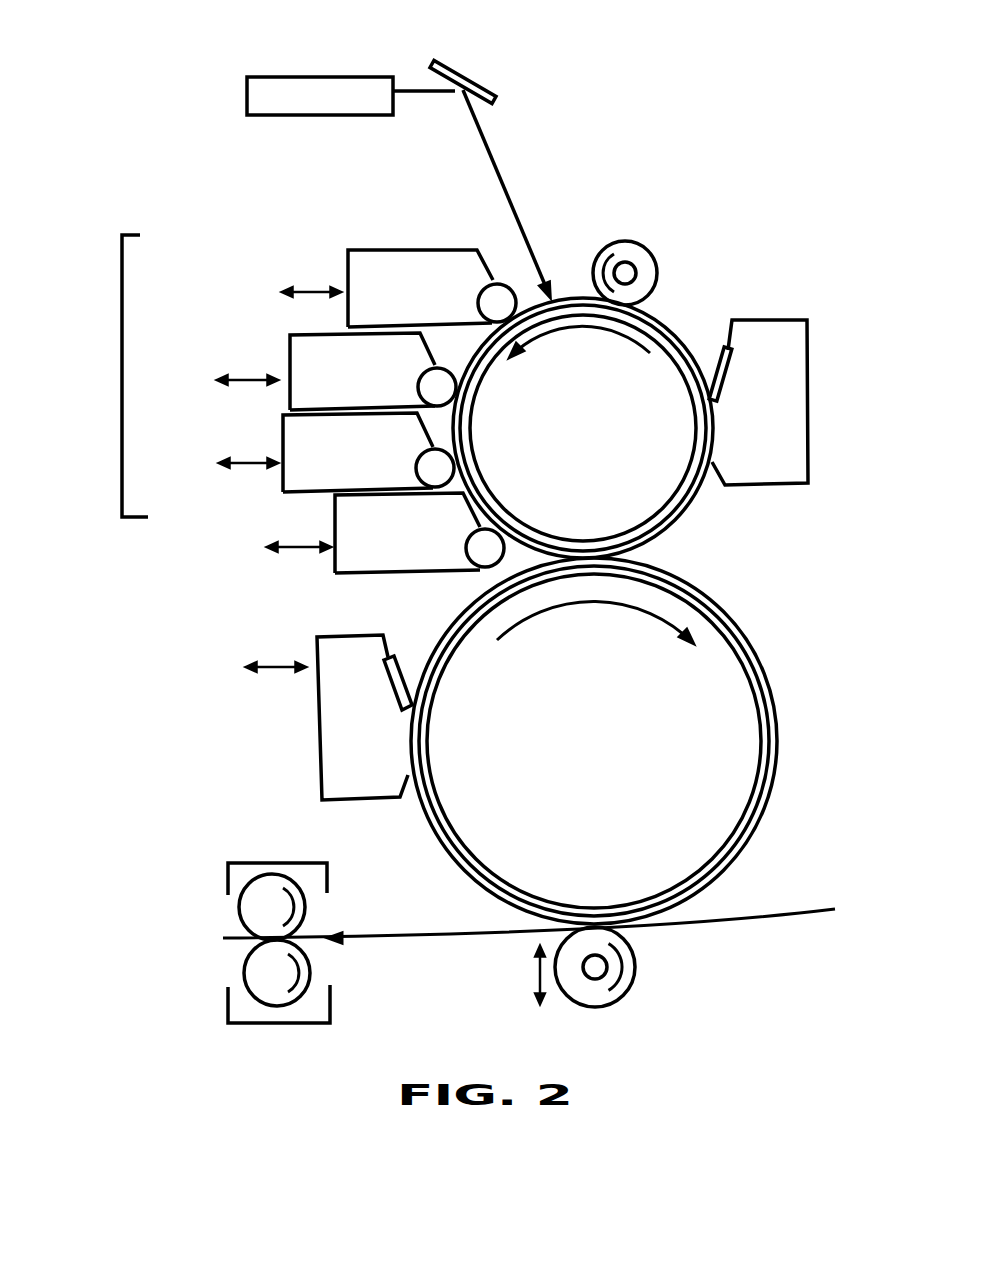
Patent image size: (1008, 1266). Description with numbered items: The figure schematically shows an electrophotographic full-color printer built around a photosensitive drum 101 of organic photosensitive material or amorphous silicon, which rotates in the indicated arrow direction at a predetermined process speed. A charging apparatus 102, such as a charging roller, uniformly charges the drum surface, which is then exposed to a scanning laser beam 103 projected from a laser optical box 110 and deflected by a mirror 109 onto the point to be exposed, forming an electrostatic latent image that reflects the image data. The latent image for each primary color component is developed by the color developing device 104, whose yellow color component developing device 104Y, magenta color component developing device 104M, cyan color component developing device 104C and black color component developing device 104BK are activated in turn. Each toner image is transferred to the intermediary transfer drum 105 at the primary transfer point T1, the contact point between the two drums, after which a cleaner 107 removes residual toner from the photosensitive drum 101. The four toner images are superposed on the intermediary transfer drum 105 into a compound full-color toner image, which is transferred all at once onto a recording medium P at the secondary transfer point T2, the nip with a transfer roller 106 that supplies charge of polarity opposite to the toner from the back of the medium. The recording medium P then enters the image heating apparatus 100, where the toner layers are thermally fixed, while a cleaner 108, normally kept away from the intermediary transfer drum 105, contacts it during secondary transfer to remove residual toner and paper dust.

The image heating apparatus (fixing apparatus) 100 is at (268, 860).
The photosensitive drum 101 is at (675, 330).
The charging apparatus 102 is at (640, 258).
The laser beam 103 is at (505, 196).
The color developing device 104 is at (122, 380).
The yellow color component developing device 104Y is at (365, 280).
The magenta color component developing device 104M is at (310, 368).
The cyan color component developing device 104C is at (303, 447).
The black color component developing device 104BK is at (350, 525).
The intermediary transfer drum 105 is at (778, 730).
The transfer roller 106 is at (648, 967).
The cleaner 107 is at (785, 415).
The cleaner 108 is at (335, 722).
The mirror 109 is at (478, 82).
The laser optical box 110 is at (320, 77).
The primary transfer point T1 is at (583, 560).
The secondary transfer point T2 is at (594, 927).
The recording medium P is at (812, 908).